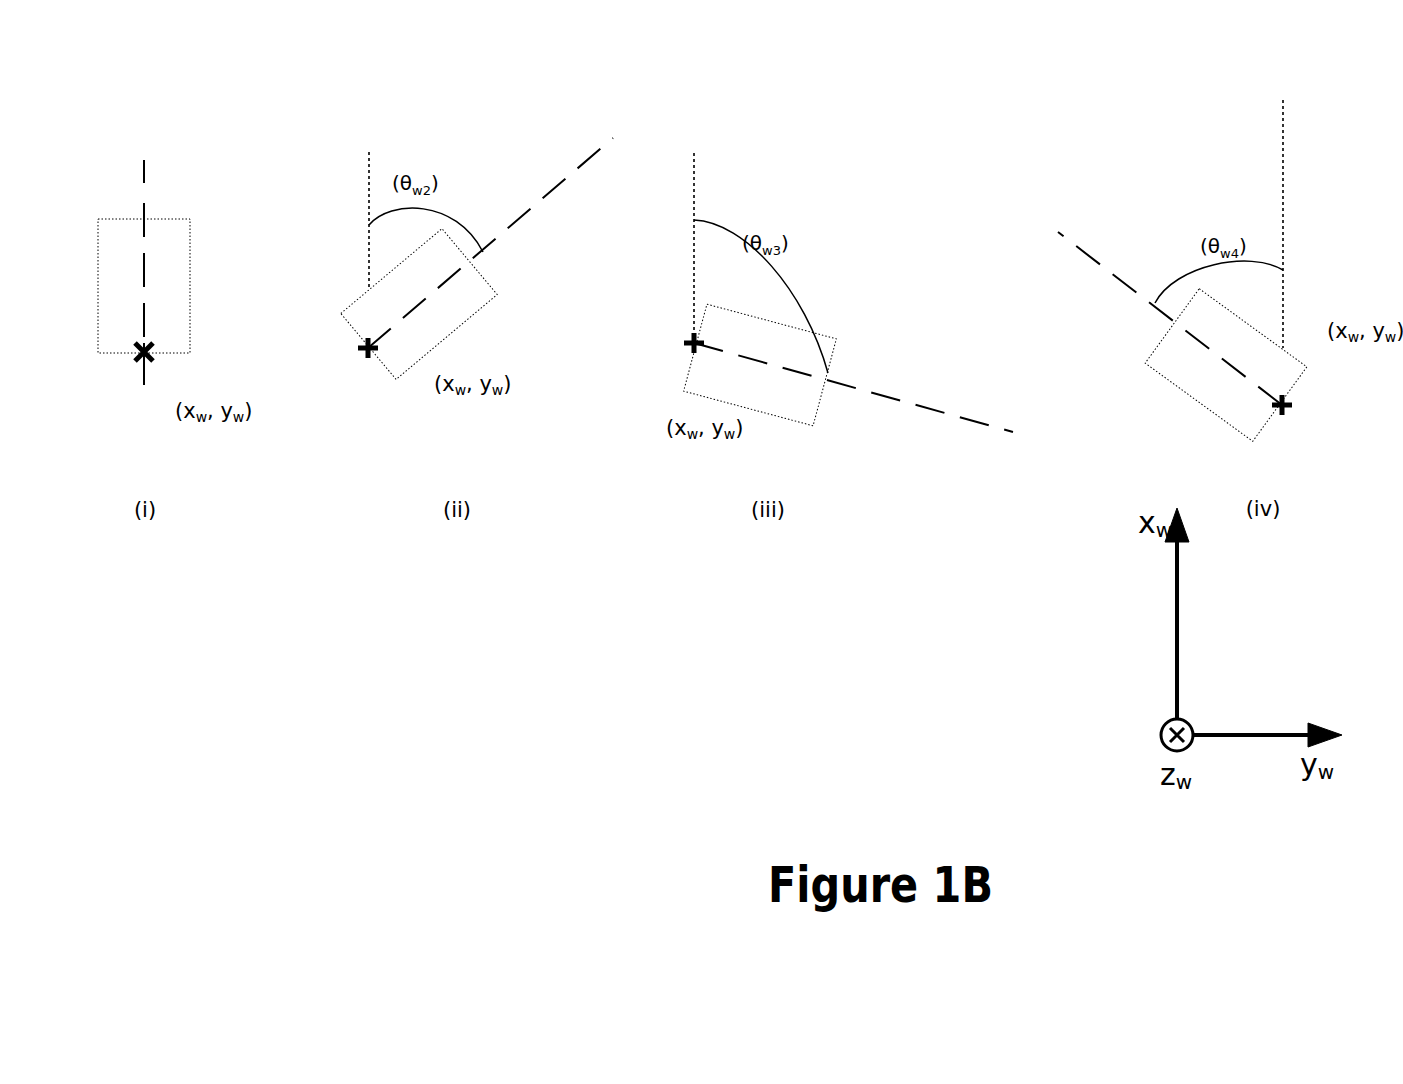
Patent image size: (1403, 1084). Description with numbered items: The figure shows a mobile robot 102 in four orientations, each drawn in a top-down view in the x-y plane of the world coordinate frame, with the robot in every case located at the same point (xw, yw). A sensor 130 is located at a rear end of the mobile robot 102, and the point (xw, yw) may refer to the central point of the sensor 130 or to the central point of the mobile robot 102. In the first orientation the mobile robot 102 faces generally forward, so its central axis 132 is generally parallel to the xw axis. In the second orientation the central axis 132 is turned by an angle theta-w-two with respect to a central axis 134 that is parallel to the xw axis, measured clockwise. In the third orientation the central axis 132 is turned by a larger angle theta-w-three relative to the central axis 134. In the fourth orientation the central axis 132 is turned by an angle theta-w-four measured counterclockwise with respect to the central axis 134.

The mobile robot 102 is at (190, 283).
The sensor 130 is at (150, 352).
The central axis 132 is at (146, 176).
The central axis 134 is at (369, 166).